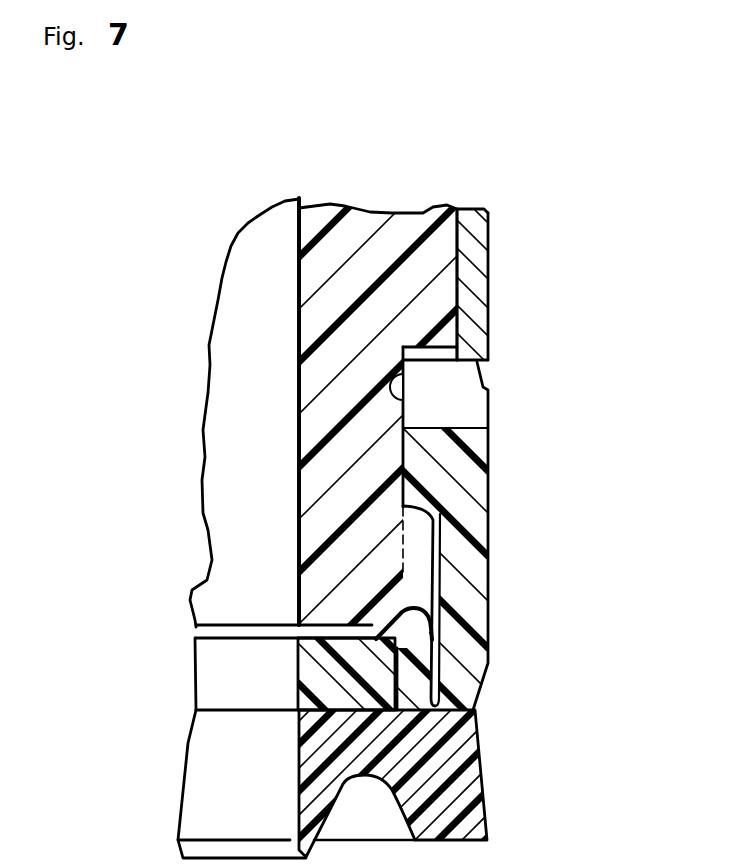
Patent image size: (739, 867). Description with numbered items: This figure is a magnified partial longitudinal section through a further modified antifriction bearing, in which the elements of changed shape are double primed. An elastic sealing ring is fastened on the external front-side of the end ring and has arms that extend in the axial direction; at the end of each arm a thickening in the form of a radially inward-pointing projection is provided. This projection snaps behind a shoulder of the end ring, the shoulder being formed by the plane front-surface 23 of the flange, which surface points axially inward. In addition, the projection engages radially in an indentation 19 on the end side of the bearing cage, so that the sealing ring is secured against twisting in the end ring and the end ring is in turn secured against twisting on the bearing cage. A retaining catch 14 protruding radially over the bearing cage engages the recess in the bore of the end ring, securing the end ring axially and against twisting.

The retaining catch 14 is at (417, 525).
The indentation 19 is at (397, 594).
The plane front-surface 23 is at (405, 585).